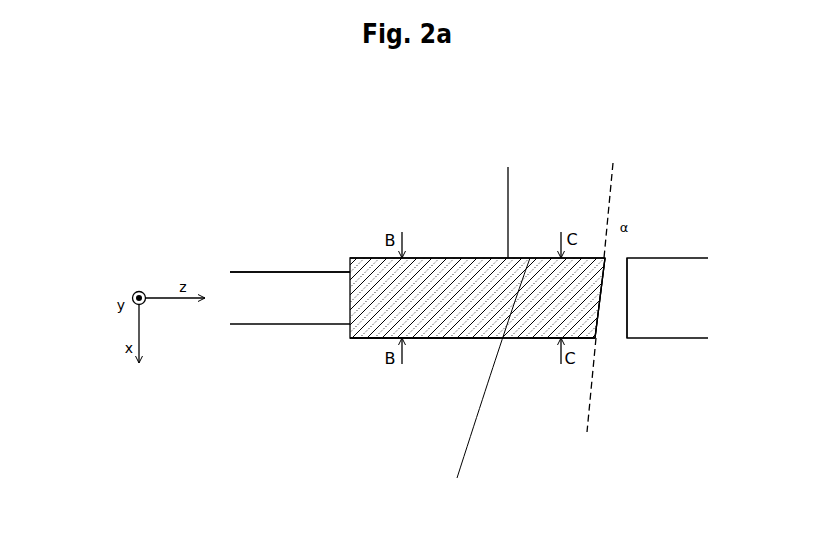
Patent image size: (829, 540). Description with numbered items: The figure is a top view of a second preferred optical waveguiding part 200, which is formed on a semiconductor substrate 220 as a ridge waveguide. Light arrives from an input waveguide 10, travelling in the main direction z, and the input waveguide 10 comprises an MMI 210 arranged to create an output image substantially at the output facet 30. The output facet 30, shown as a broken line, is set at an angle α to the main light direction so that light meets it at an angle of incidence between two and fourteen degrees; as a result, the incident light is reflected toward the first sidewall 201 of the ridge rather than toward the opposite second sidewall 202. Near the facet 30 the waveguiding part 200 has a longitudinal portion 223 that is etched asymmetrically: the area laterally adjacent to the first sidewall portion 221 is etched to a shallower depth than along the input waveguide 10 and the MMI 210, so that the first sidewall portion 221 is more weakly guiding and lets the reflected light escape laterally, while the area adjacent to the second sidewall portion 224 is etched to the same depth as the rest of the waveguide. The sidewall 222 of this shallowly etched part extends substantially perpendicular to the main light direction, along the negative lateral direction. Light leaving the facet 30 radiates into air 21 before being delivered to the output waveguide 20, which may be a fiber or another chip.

The optical waveguiding part 200 is at (322, 211).
The input waveguide 10 is at (290, 298).
The MMI 210 is at (479, 297).
The first sidewall 201 is at (470, 258).
The second sidewall 202 is at (453, 338).
The sidewall of the shallowly etched part 222 is at (505, 182).
The output facet 30 is at (600, 297).
The longitudinal portion 223 is at (581, 298).
The first sidewall portion 221 is at (485, 382).
The second sidewall portion 224 is at (538, 338).
The semiconductor substrate 220 is at (416, 377).
The output waveguide 20 is at (667, 298).
The air 21 is at (610, 325).